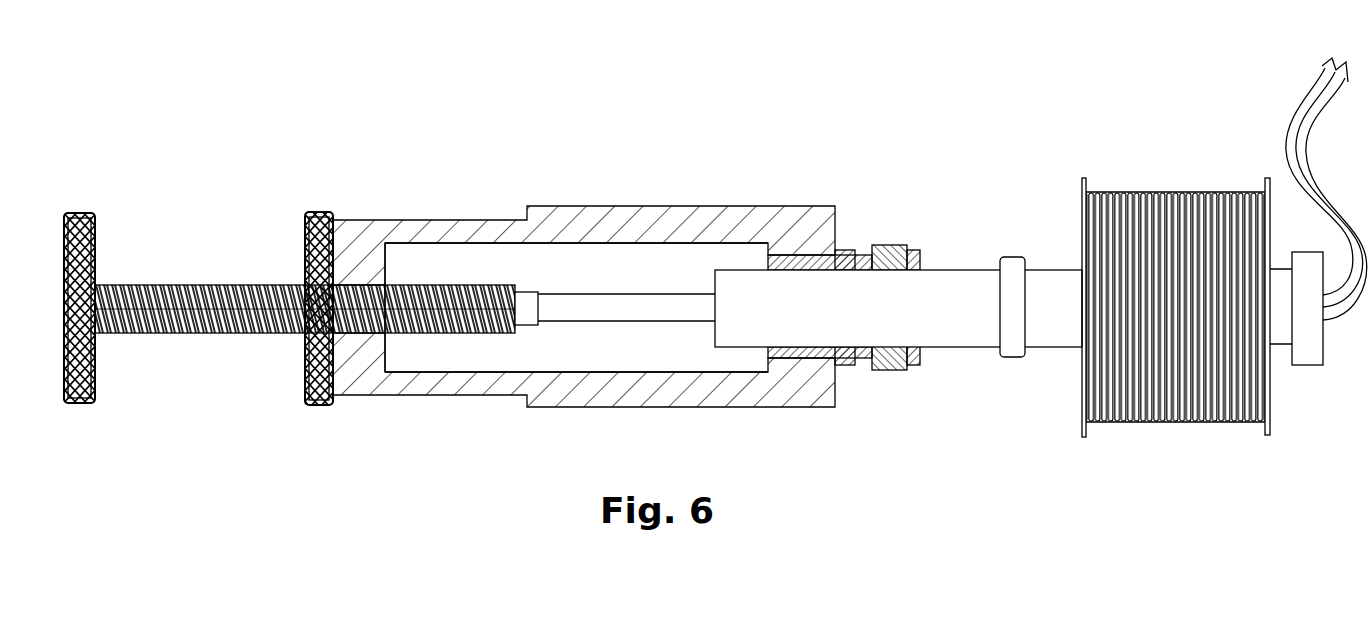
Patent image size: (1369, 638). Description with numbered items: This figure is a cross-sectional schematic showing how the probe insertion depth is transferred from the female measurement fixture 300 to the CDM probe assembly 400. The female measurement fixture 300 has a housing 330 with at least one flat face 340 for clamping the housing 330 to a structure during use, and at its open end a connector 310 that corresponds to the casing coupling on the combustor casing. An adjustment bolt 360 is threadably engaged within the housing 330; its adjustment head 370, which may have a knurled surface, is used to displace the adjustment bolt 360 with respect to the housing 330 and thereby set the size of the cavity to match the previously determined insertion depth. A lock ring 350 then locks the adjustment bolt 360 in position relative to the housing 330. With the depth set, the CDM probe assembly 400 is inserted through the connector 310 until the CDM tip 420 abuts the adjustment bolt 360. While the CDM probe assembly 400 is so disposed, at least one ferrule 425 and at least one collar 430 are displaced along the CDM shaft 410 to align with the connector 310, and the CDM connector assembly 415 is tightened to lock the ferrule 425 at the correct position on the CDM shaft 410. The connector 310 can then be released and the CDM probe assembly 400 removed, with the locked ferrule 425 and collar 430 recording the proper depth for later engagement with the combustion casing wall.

The female measurement fixture 300 is at (584, 301).
The connector 310 is at (850, 365).
The housing 330 is at (540, 392).
The flat face 340 is at (378, 208).
The lock ring 350 is at (318, 406).
The adjustment bolt 360 is at (180, 352).
The adjustment head 370 is at (83, 404).
The CDM probe assembly 400 is at (1090, 472).
The CDM shaft 410 is at (977, 365).
The CDM connector assembly 415 is at (916, 390).
The CDM tip 420 is at (543, 325).
The ferrule 425 is at (896, 243).
The collar 430 is at (920, 250).